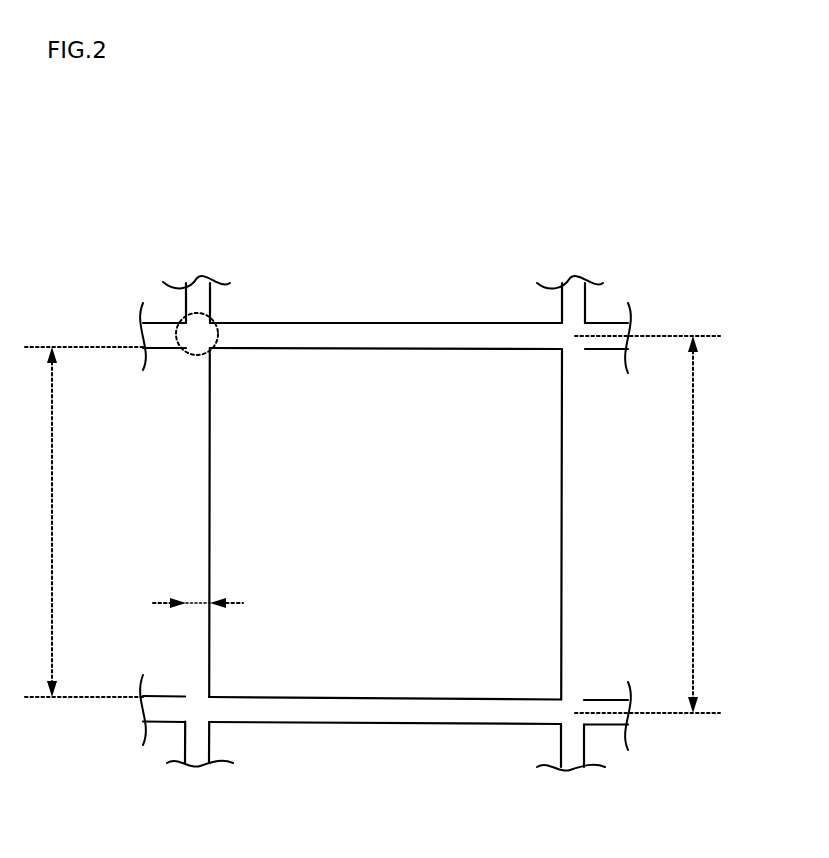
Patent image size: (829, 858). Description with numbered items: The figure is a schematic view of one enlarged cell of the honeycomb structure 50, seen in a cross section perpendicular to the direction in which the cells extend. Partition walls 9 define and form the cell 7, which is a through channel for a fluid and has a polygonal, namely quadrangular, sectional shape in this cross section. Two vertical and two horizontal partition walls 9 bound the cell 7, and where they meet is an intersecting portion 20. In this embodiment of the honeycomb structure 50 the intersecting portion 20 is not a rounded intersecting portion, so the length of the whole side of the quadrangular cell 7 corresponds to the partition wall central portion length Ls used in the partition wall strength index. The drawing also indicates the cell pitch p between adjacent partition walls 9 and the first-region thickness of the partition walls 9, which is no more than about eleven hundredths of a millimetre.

The honeycomb structure 50 is at (623, 122).
The intersecting portion 20 is at (214, 321).
The partition walls 9 is at (347, 330).
The cells 7 is at (400, 423).